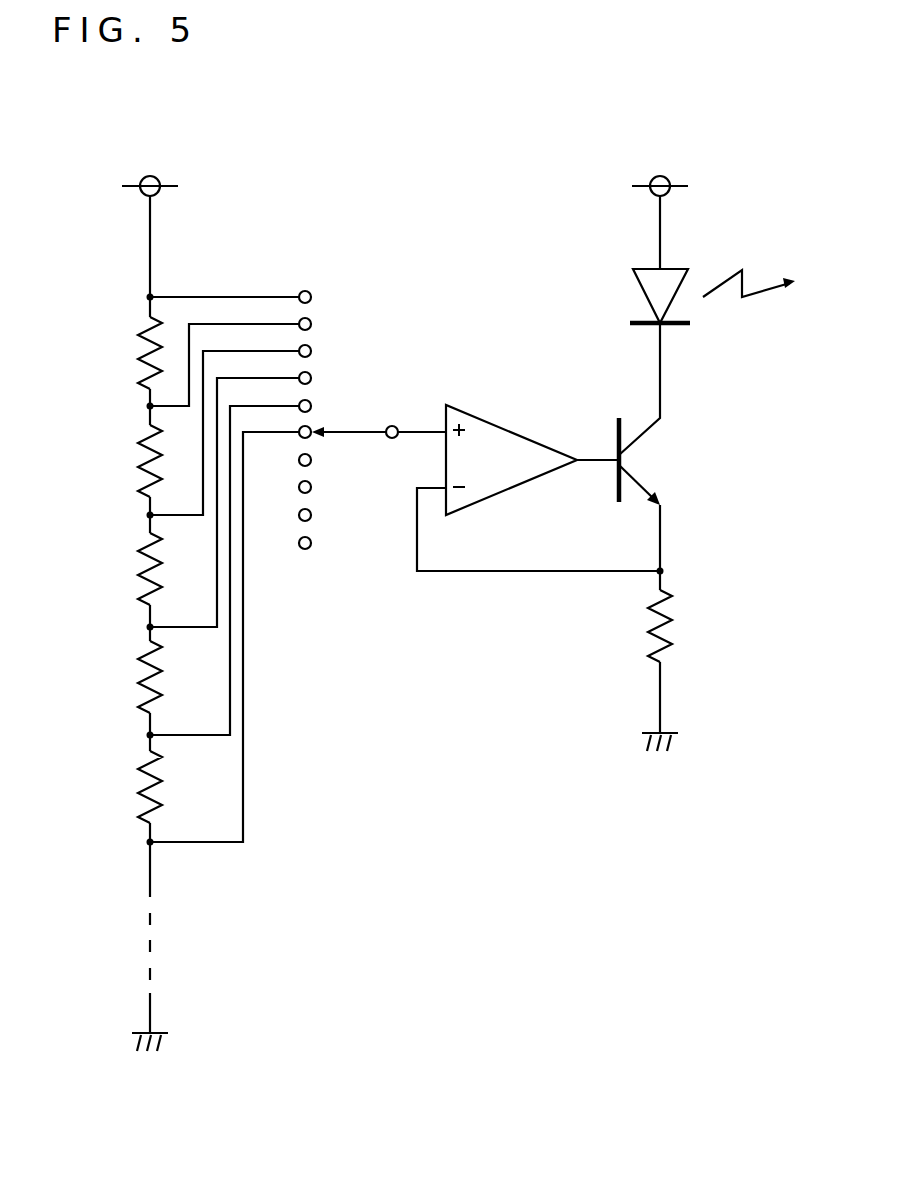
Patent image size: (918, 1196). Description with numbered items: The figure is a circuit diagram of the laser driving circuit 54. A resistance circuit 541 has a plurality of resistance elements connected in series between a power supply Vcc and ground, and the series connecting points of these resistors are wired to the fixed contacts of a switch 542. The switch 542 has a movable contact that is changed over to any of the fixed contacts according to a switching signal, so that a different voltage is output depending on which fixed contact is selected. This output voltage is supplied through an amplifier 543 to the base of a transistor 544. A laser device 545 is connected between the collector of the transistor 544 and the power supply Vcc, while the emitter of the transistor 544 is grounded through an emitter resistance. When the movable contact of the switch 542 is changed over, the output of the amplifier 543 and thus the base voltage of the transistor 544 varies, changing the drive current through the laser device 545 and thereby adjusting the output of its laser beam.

The laser driving circuit 54 is at (433, 225).
The resistance circuit 541 is at (118, 832).
The switch 542 is at (354, 466).
The amplifier 543 is at (496, 434).
The transistor 544 is at (614, 478).
The laser device 545 is at (658, 298).